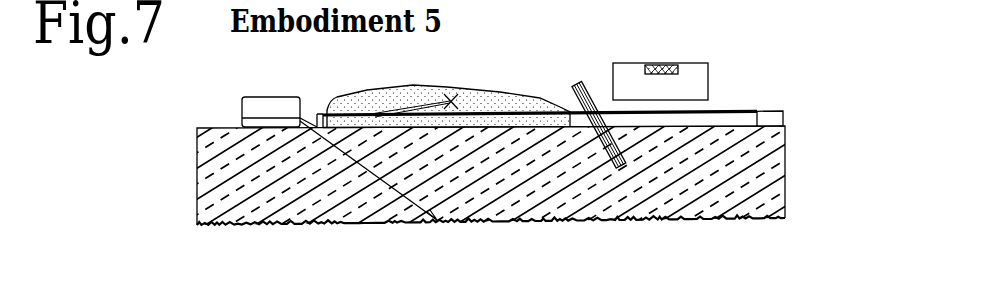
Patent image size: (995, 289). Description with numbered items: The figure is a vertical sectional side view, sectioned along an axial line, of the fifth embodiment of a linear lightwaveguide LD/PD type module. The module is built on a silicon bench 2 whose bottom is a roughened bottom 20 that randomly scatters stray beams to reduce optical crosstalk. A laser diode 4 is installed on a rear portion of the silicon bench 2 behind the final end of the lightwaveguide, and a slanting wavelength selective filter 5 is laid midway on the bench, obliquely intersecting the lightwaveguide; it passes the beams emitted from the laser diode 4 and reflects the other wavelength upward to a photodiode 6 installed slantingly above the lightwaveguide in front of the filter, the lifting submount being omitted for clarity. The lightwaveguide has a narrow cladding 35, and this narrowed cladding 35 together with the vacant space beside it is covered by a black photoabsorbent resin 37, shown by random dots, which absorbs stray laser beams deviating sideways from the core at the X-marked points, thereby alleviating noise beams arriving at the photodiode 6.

The silicon bench 2 is at (637, 197).
The laser diode 4 is at (286, 101).
The wavelength selective filter 5 is at (583, 82).
The photodiode 6 is at (692, 78).
The roughened bottom 20 is at (470, 225).
The narrow cladding 35 is at (757, 118).
The photoabsorbent resin 37 is at (502, 101).